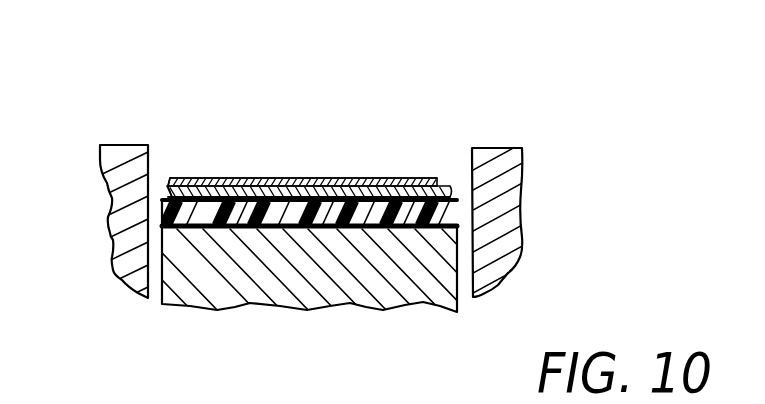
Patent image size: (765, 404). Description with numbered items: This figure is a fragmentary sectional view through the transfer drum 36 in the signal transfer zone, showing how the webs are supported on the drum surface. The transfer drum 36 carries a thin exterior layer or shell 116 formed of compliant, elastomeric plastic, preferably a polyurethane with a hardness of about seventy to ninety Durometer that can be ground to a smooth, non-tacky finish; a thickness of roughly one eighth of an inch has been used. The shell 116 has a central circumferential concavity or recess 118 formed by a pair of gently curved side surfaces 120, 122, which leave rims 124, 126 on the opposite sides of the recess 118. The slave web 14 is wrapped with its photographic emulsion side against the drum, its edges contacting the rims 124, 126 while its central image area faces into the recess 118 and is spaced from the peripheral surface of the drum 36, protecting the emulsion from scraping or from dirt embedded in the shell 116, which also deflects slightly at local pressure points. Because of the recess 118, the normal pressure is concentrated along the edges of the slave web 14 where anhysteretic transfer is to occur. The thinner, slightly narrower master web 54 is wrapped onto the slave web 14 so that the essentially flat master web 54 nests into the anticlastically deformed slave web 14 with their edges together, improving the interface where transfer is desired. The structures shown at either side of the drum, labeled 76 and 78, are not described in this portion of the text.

The slave web 14 is at (250, 178).
The transfer drum 36 is at (337, 300).
The master web 54 is at (207, 178).
The right guide wall 76 is at (490, 148).
The left guide wall 78 is at (128, 145).
The exterior layer or shell 116 is at (442, 227).
The central circumferential recess 118 is at (330, 177).
The curved side surface 120 is at (362, 181).
The curved side surface 122 is at (265, 193).
The rim 124 is at (452, 200).
The rim 126 is at (162, 199).